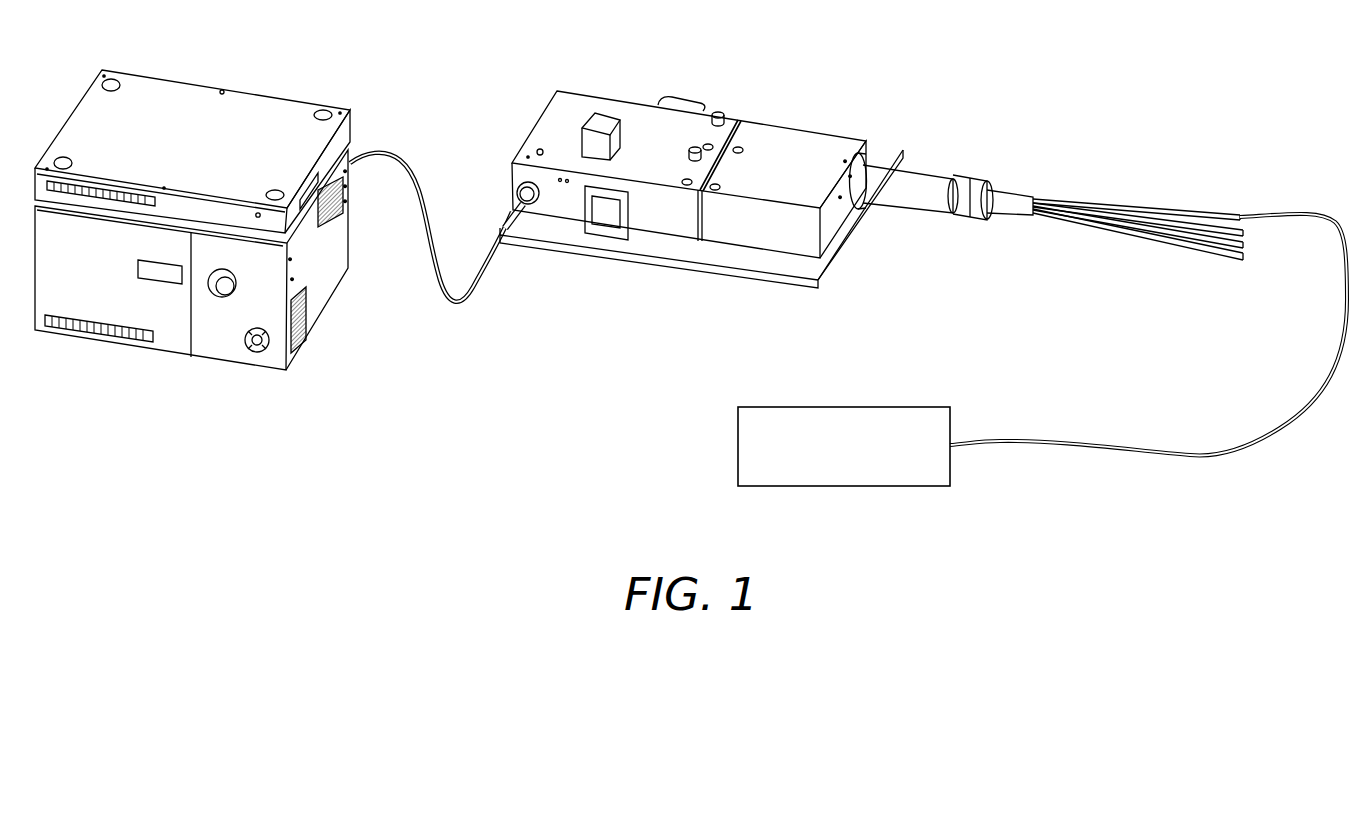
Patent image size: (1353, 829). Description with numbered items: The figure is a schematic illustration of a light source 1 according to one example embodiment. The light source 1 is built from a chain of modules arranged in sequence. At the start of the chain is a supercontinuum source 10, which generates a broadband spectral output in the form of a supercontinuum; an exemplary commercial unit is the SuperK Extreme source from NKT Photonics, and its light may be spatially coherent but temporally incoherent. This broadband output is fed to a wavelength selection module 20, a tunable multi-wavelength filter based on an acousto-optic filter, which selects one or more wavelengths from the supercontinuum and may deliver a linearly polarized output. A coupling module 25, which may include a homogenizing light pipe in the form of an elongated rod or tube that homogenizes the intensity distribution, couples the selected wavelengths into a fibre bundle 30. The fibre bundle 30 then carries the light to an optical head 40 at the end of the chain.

The light source 1 is at (1188, 58).
The supercontinuum source 10 is at (291, 78).
The wavelength selection module 20 is at (775, 100).
The coupling module 25 is at (961, 156).
The fibre bundle 30 is at (1160, 256).
The optical head 40 is at (718, 432).